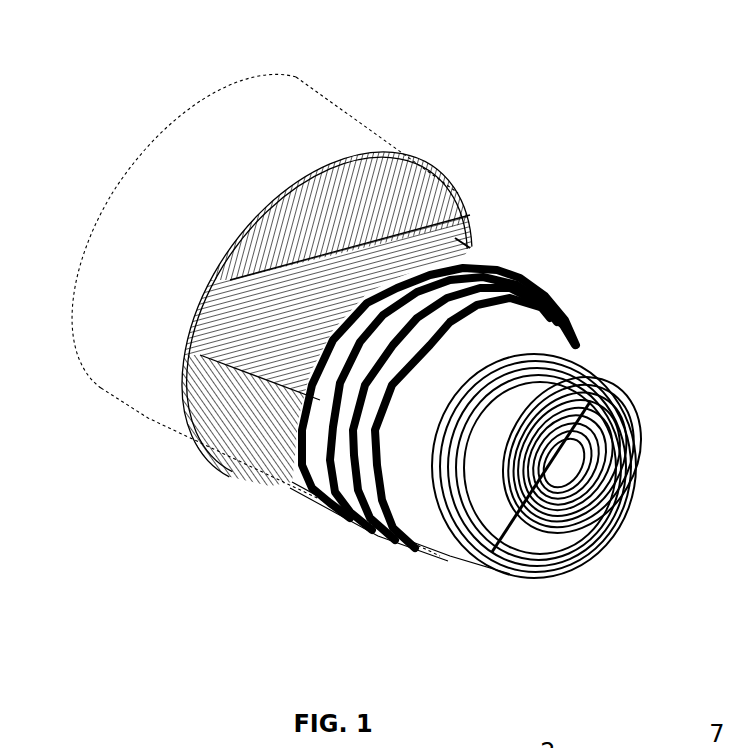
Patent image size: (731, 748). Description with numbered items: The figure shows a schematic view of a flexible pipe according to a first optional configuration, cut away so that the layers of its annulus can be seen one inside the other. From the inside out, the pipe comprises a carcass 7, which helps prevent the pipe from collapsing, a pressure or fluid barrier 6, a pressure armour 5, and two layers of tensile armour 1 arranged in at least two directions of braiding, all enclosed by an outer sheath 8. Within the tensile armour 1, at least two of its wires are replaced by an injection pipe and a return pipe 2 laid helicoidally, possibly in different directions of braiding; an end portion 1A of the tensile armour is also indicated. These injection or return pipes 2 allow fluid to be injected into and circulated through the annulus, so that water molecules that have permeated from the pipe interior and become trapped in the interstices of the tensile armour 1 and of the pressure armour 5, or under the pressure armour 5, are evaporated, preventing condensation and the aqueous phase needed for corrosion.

The tensile armour 1 is at (407, 190).
The filter element end portion 1A is at (460, 242).
The injection or return pipes 2 is at (221, 357).
The pressure armour 5 is at (347, 483).
The pressure or fluid barrier 6 is at (416, 514).
The carcass 7 is at (487, 547).
The outer sheath 8 is at (132, 365).